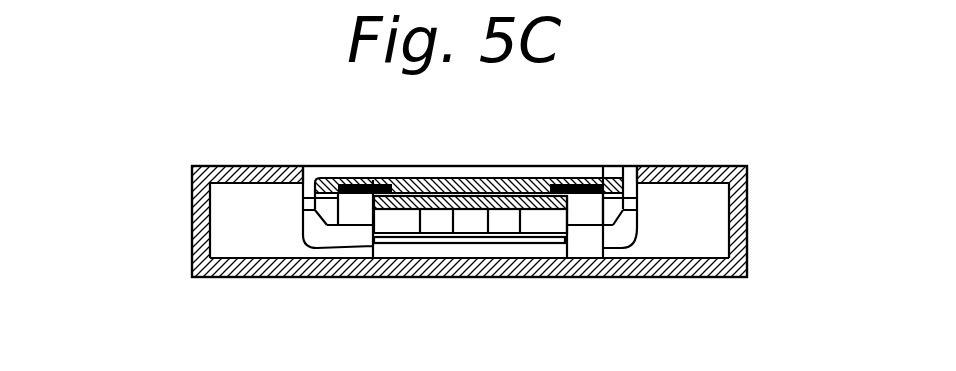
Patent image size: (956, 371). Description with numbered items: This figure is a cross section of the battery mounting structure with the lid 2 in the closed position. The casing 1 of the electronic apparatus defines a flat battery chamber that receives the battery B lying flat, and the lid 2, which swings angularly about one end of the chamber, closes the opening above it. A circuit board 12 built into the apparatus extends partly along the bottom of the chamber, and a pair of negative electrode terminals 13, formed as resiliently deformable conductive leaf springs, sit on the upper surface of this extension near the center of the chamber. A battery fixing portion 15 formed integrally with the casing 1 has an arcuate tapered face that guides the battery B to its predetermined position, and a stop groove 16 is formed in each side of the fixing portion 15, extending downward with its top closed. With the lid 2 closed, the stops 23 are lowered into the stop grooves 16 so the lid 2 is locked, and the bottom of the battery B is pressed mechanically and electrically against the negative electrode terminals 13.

The casing 1 is at (668, 278).
The lid 2 is at (582, 172).
The battery B is at (500, 190).
The circuit board 12 is at (398, 243).
The negative electrode terminals 13 is at (440, 222).
The battery fixing portion 15 is at (371, 180).
The stop groove 16 is at (357, 212).
The stops 23 is at (333, 238).